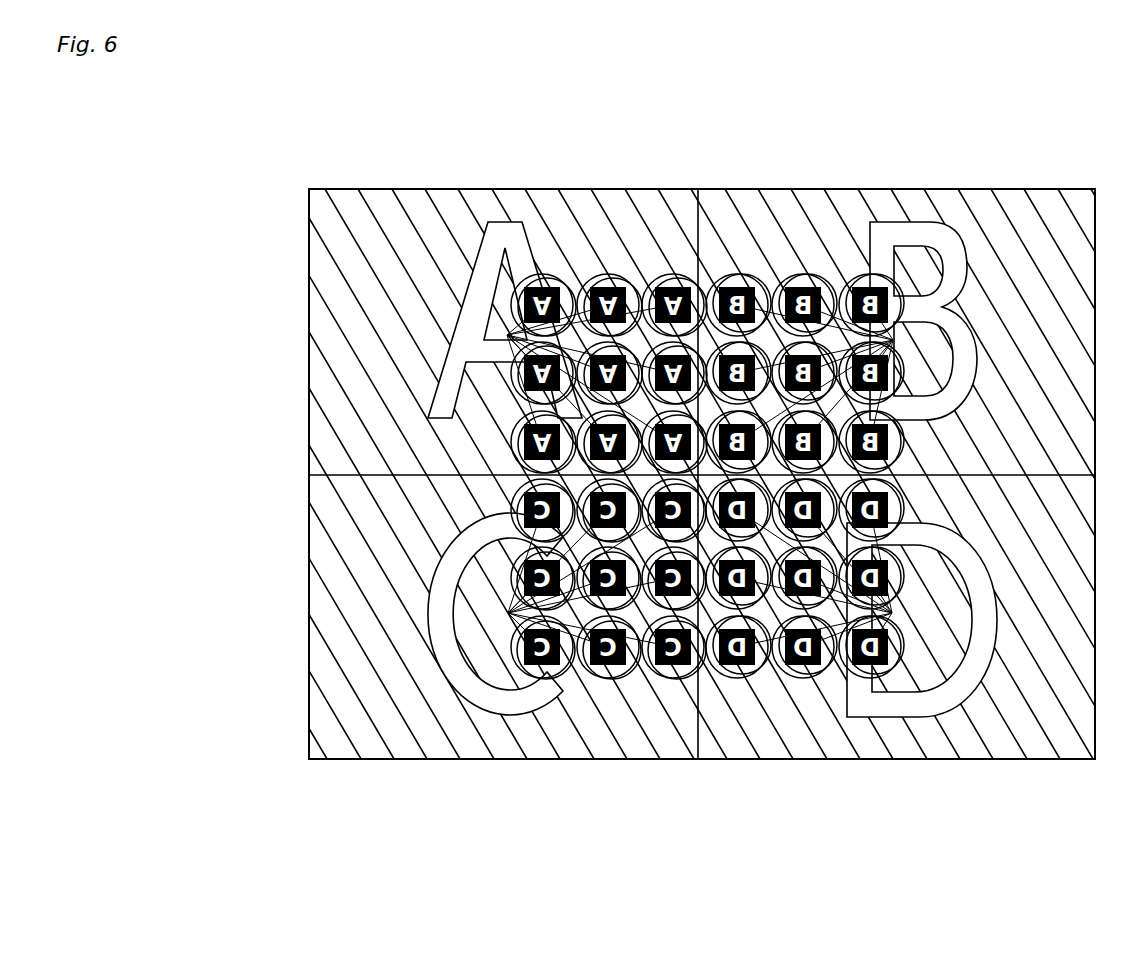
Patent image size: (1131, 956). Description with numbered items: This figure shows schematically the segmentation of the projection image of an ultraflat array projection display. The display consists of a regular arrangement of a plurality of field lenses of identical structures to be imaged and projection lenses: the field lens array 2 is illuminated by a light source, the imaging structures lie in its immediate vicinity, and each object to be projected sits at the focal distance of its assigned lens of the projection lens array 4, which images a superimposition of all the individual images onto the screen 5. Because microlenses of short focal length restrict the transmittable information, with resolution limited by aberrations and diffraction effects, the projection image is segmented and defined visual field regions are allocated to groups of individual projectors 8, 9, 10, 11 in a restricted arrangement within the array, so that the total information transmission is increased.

The screen 5 is at (309, 188).
The field lens array 2 is at (545, 278).
The group of individual projectors 8 is at (670, 277).
The group of individual projectors 9 is at (748, 280).
The projection lens array 4 is at (637, 672).
The group of individual projectors 10 is at (673, 673).
The group of individual projectors 11 is at (873, 670).